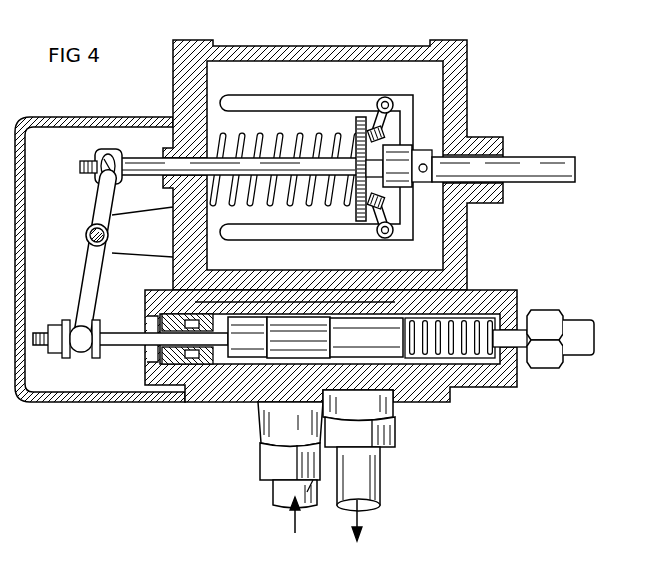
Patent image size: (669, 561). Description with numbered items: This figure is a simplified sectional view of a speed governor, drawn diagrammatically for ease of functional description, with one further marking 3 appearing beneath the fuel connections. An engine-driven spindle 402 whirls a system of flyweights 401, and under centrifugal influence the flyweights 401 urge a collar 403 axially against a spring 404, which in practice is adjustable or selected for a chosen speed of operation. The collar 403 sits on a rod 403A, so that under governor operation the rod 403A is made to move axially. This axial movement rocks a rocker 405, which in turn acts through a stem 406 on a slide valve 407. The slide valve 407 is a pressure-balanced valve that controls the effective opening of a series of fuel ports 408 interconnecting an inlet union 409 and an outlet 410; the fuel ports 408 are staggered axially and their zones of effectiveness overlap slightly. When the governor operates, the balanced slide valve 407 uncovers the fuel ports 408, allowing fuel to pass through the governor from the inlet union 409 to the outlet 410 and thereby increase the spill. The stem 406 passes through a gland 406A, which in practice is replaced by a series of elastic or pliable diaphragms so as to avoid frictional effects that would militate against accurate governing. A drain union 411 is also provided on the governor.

The flyweights 401 is at (273, 103).
The engine-driven spindle 402 is at (557, 164).
The collar 403 is at (361, 117).
The rod 403A is at (145, 160).
The spring 404 is at (285, 157).
The rocker 405 is at (92, 276).
The stem 406 is at (121, 338).
The gland 406A is at (184, 398).
The slide valve 407 is at (249, 360).
The fuel ports 408 is at (357, 318).
The inlet union 409 is at (277, 466).
The outlet 410 is at (390, 440).
The drain union 411 is at (545, 362).
The passage 3 is at (307, 492).